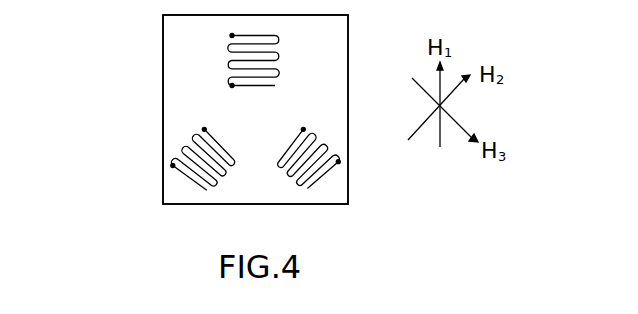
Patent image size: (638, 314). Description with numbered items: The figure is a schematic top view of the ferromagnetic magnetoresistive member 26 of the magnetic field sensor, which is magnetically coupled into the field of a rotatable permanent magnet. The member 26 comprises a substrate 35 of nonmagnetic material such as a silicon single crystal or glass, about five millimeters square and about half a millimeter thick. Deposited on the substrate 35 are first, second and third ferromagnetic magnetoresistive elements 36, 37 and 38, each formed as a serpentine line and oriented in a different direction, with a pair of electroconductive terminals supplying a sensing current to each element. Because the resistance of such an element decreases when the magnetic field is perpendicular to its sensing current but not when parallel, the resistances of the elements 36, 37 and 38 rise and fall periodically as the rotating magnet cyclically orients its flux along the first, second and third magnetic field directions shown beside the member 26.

The ferromagnetic magnetoresistive member 26 is at (154, 103).
The substrate 35 is at (348, 190).
The first ferromagnetic magnetoresistive element 36 is at (280, 52).
The second ferromagnetic magnetoresistive element 37 is at (213, 183).
The third ferromagnetic magnetoresistive element 38 is at (293, 146).